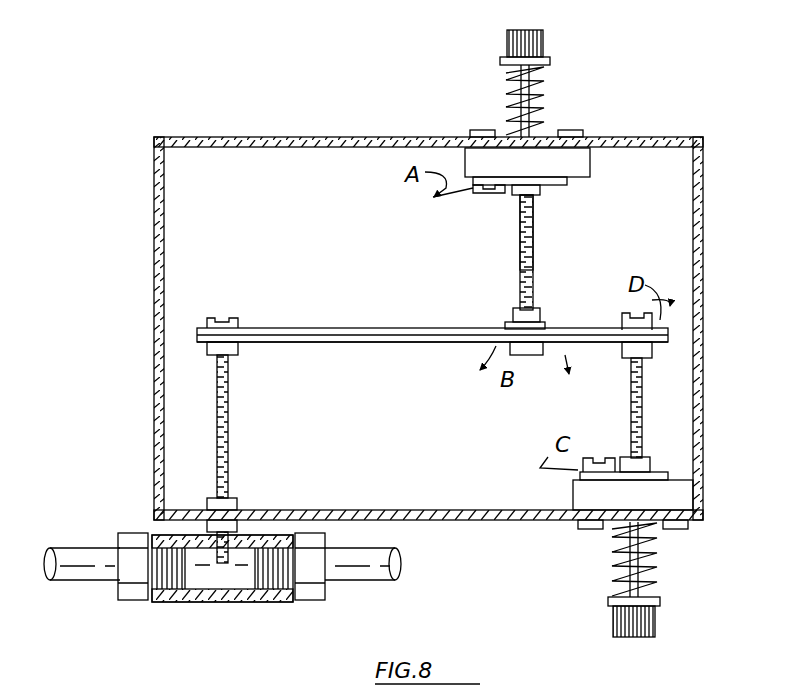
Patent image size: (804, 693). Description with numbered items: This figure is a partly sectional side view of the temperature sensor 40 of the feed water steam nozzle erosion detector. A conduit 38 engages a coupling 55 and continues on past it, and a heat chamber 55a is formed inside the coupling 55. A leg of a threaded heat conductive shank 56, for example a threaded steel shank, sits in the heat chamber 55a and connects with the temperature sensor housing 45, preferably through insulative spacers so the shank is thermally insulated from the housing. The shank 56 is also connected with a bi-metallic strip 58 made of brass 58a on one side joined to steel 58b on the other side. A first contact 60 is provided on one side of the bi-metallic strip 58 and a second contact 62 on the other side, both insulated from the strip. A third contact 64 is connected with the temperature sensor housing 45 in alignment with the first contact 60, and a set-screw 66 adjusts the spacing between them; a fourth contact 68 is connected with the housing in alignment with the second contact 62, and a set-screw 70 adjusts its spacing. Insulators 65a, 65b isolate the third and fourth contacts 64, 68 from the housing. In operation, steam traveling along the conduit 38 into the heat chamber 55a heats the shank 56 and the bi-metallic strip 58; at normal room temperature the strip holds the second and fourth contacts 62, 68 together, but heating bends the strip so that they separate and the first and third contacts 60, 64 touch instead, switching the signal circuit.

The conduit 38 is at (68, 548).
The temperature sensor 40 is at (710, 136).
The temperature sensor housing 45 is at (704, 291).
The coupling 55 is at (220, 590).
The heat chamber 55a is at (203, 578).
The threaded heat conductive shank 56 is at (232, 423).
The bi-metallic strip 58 is at (432, 331).
The brass 58a is at (395, 309).
The steel 58b is at (408, 343).
The first contact 60 is at (630, 392).
The second contact 62 is at (519, 268).
The third contact 64 is at (646, 393).
The insulator 65a is at (545, 326).
The insulator 65b is at (656, 349).
The set-screw 66 is at (656, 592).
The fourth contact 68 is at (534, 276).
The set-screw 70 is at (547, 92).